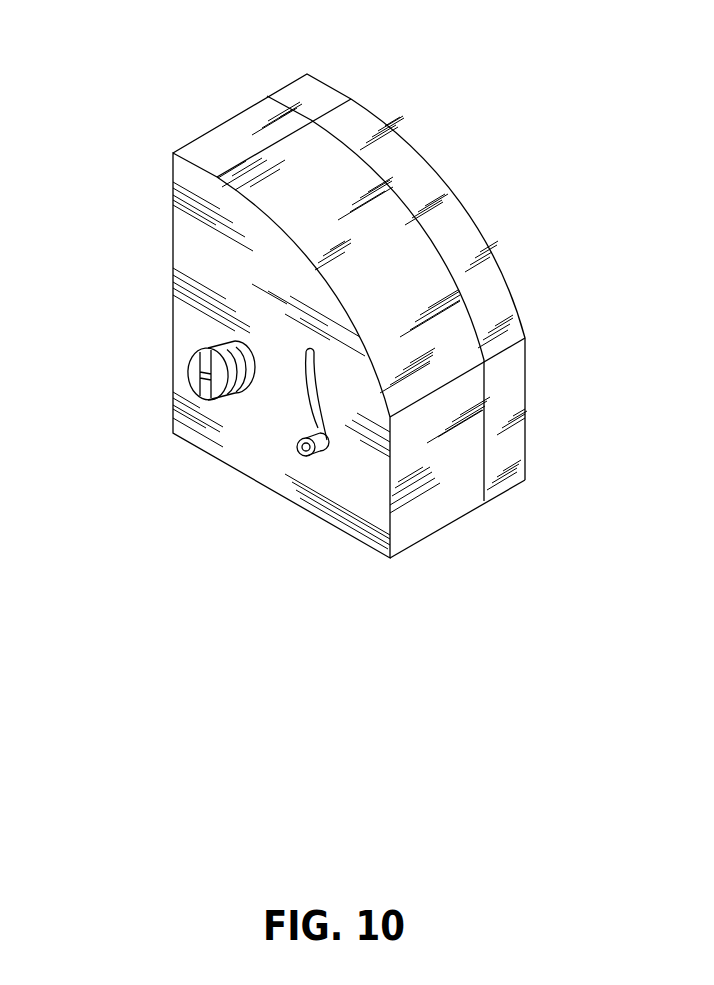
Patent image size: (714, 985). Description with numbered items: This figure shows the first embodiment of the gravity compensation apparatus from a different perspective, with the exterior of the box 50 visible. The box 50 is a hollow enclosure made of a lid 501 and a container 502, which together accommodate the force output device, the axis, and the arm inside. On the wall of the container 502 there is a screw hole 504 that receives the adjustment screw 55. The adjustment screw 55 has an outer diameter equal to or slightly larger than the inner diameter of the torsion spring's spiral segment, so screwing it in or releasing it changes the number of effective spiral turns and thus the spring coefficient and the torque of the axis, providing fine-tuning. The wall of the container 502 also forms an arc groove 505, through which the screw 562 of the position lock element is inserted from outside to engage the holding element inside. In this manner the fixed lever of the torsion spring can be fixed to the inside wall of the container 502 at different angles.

The box 50 is at (295, 285).
The lid 501 is at (367, 137).
The container 502 is at (287, 190).
The adjustment screw 55 is at (155, 434).
The screw hole 504 is at (238, 387).
The arc groove 505 is at (434, 477).
The screw 562 is at (317, 453).